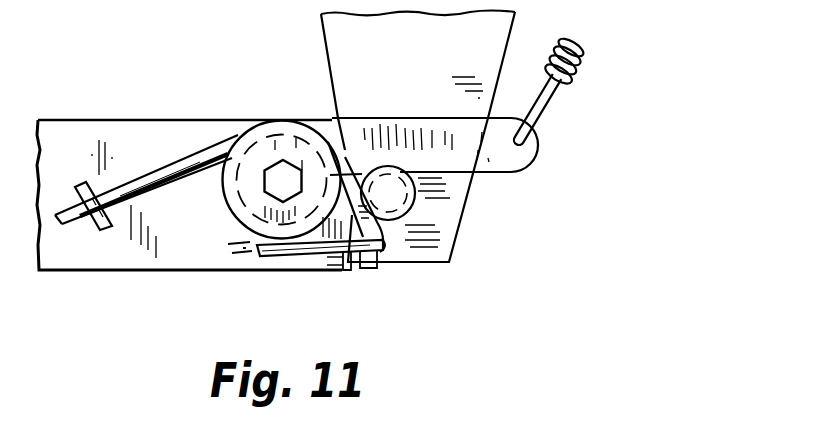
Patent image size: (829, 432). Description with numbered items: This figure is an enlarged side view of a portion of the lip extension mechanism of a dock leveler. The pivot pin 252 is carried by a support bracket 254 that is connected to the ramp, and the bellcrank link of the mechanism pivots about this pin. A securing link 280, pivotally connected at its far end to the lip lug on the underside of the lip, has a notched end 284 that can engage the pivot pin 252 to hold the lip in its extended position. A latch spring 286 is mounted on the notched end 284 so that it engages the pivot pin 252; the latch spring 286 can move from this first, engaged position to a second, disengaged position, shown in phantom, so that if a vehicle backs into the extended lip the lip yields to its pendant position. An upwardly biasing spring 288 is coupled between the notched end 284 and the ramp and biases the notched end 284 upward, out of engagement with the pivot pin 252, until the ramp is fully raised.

The securing link 280 is at (157, 120).
The support bracket 254 is at (440, 64).
The notched end 284 is at (516, 152).
The pivot pin 252 is at (418, 205).
The latch spring 286 is at (380, 252).
The upwardly biasing spring 288 is at (576, 50).